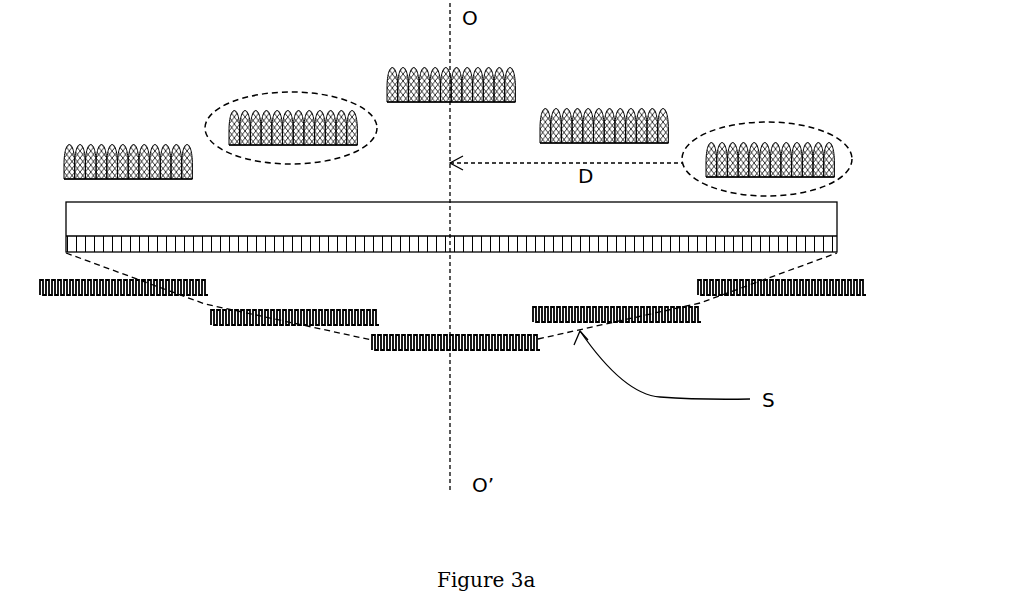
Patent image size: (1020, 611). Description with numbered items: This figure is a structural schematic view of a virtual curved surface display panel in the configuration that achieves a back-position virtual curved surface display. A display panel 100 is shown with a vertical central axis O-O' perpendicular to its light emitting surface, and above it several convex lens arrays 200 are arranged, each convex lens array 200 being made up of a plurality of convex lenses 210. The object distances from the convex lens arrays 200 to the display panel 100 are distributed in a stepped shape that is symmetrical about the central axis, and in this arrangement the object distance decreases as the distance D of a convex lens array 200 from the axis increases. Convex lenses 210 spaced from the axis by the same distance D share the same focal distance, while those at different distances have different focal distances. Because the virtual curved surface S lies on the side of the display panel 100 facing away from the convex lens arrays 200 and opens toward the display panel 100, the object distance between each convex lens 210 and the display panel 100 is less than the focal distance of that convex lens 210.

The display panel 100 is at (837, 243).
The convex lens array 200 is at (377, 139).
The convex lens 210 is at (513, 90).